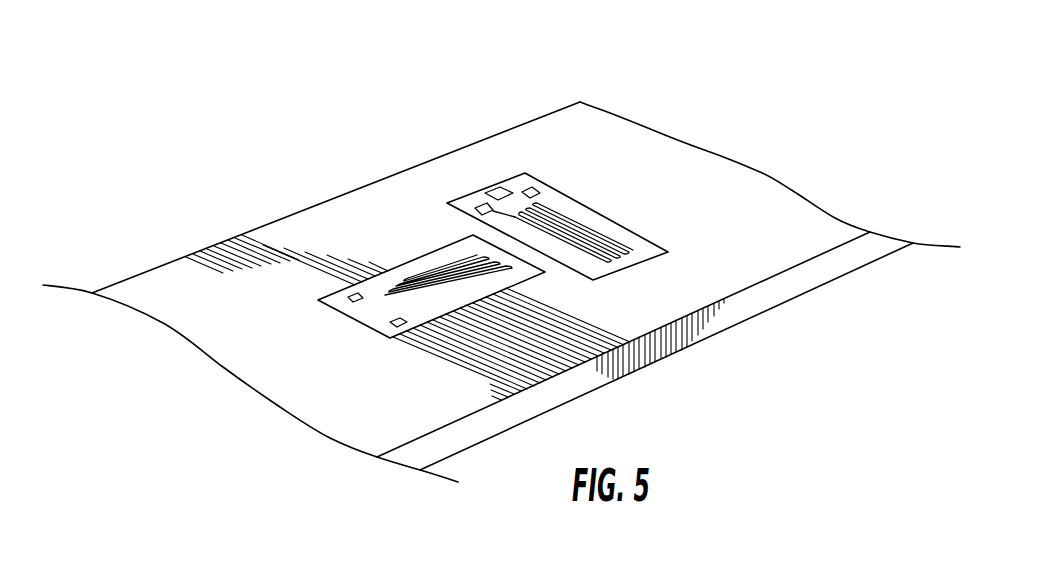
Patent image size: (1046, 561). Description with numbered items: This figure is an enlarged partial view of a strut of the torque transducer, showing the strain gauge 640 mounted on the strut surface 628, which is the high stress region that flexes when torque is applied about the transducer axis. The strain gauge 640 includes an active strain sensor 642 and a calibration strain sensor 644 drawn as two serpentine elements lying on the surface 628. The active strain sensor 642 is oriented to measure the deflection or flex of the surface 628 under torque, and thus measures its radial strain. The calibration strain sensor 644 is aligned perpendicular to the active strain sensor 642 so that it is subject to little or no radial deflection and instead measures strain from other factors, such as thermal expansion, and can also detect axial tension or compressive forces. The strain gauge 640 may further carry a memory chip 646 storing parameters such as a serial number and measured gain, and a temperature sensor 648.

The flexible substrate sheet 628 is at (410, 133).
The strain gauge 640 is at (617, 206).
The active strain sensor 642 is at (417, 254).
The calibration strain sensor 644 is at (593, 218).
The memory chip 646 is at (499, 188).
The temperature sensor 648 is at (652, 255).